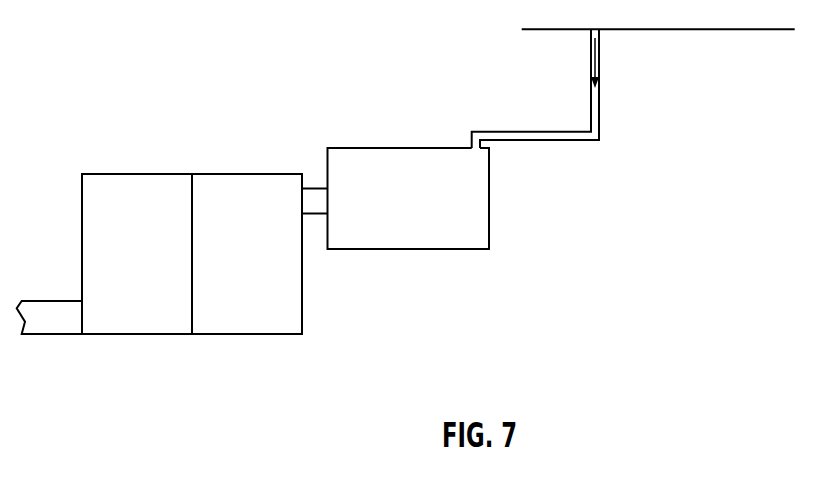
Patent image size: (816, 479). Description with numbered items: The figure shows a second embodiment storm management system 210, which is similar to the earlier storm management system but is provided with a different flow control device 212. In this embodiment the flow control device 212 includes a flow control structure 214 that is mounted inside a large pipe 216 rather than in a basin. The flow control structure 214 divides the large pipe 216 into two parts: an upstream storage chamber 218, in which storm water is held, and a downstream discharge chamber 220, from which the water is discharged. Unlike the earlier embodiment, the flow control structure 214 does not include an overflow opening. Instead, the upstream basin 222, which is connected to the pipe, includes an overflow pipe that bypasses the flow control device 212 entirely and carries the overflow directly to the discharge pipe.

The storm management system 210 is at (108, 62).
The flow control device 212 is at (265, 335).
The flow control structure 214 is at (204, 203).
The large pipe 216 is at (128, 335).
The upstream storage chamber 218 is at (271, 173).
The downstream discharge chamber 220 is at (149, 173).
The upstream basin 222 is at (489, 197).